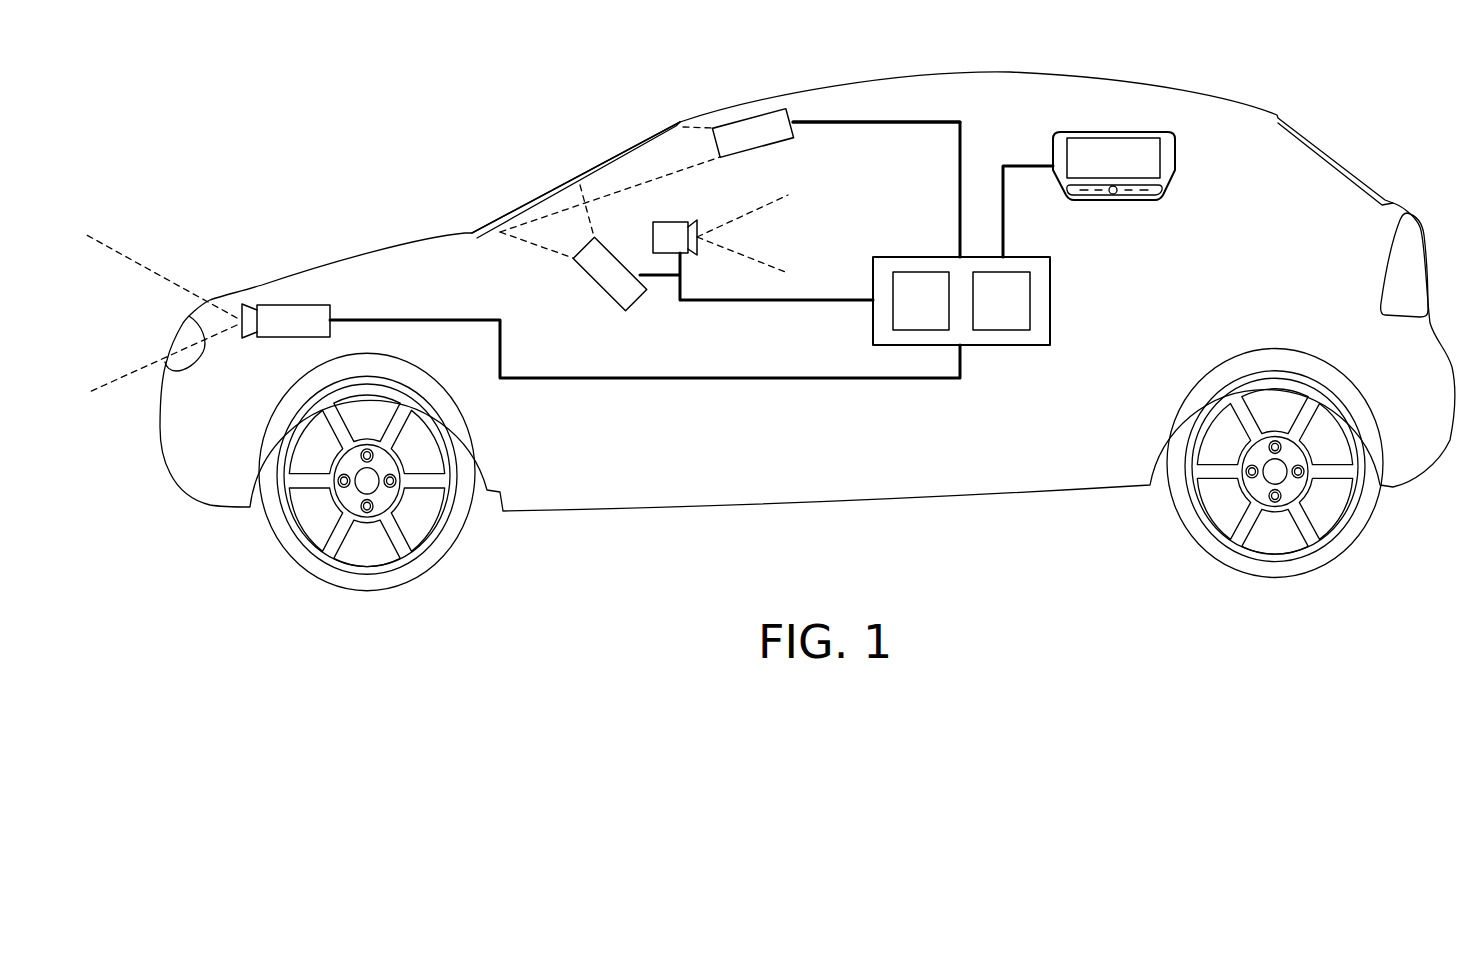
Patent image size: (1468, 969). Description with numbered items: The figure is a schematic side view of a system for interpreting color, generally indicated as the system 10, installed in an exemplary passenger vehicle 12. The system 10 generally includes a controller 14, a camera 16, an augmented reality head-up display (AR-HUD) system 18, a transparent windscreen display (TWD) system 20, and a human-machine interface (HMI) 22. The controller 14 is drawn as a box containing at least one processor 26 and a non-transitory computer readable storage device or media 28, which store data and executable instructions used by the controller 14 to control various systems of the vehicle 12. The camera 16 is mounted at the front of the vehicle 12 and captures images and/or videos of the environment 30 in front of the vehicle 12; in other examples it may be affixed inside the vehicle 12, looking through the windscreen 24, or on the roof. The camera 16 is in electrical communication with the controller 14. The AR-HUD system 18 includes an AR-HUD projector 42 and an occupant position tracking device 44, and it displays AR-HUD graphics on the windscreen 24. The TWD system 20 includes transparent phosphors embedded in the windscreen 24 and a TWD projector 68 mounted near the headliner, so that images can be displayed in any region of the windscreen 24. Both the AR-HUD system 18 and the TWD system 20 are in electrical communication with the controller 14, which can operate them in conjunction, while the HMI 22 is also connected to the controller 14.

The system for interpreting color 10 is at (528, 175).
The vehicle 12 is at (1182, 84).
The controller 14 is at (1006, 307).
The camera 16 is at (306, 331).
The augmented reality head-up display (AR-HUD) system 18 is at (686, 275).
The transparent windscreen display (TWD) system 20 is at (828, 113).
The human-machine interface (HMI) 22 is at (1170, 185).
The windscreen 24 is at (624, 153).
The processor 26 is at (933, 313).
The non-transitory computer readable storage device or media 28 is at (1013, 313).
The environment 30 is at (308, 121).
The AR-HUD projector 42 is at (598, 290).
The occupant position tracking device 44 is at (662, 218).
The TWD projector 68 is at (757, 146).